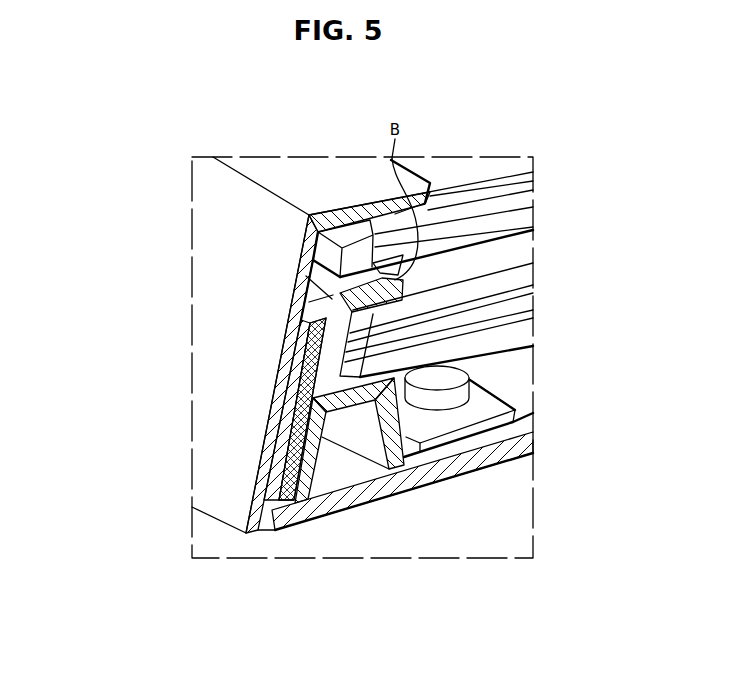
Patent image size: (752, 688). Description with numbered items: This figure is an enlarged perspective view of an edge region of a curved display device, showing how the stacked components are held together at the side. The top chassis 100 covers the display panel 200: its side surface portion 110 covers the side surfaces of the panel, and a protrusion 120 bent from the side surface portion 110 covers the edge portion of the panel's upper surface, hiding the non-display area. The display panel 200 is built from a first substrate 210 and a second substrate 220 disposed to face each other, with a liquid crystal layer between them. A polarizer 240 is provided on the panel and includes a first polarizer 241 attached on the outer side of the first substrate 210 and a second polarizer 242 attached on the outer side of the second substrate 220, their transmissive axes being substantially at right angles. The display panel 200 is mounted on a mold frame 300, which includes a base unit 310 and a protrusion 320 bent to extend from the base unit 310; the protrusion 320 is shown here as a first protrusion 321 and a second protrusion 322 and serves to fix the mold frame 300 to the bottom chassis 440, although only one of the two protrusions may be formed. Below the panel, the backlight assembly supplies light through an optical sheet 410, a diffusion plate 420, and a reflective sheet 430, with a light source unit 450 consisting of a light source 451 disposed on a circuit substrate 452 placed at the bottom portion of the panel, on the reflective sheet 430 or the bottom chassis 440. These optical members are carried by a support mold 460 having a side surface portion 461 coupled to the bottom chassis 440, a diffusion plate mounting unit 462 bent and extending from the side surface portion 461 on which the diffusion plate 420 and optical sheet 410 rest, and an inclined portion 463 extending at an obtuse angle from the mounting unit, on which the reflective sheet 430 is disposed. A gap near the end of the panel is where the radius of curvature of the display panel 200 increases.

The top chassis 100 is at (253, 345).
The side surface portion 110 is at (229, 240).
The protrusion 120 is at (302, 183).
The display panel 200 is at (480, 203).
The first substrate 210 is at (523, 210).
The second substrate 220 is at (521, 190).
The polarizer 240 is at (436, 184).
The first polarizer 241 is at (488, 240).
The second polarizer 242 is at (447, 200).
The mold frame 300 is at (201, 360).
The base unit 310 is at (322, 285).
The protrusion 320 is at (205, 380).
The first protrusion 321 is at (265, 447).
The second protrusion 322 is at (292, 383).
The optical sheet 410 is at (520, 274).
The diffusion plate 420 is at (520, 324).
The reflective sheet 430 is at (510, 399).
The bottom chassis 440 is at (478, 462).
The light source unit 450 is at (526, 396).
The light source 451 is at (452, 375).
The circuit substrate 452 is at (470, 391).
The support mold 460 is at (357, 508).
The side surface portion 461 is at (319, 466).
The diffusion plate mounting unit 462 is at (362, 402).
The inclined portion 463 is at (392, 430).